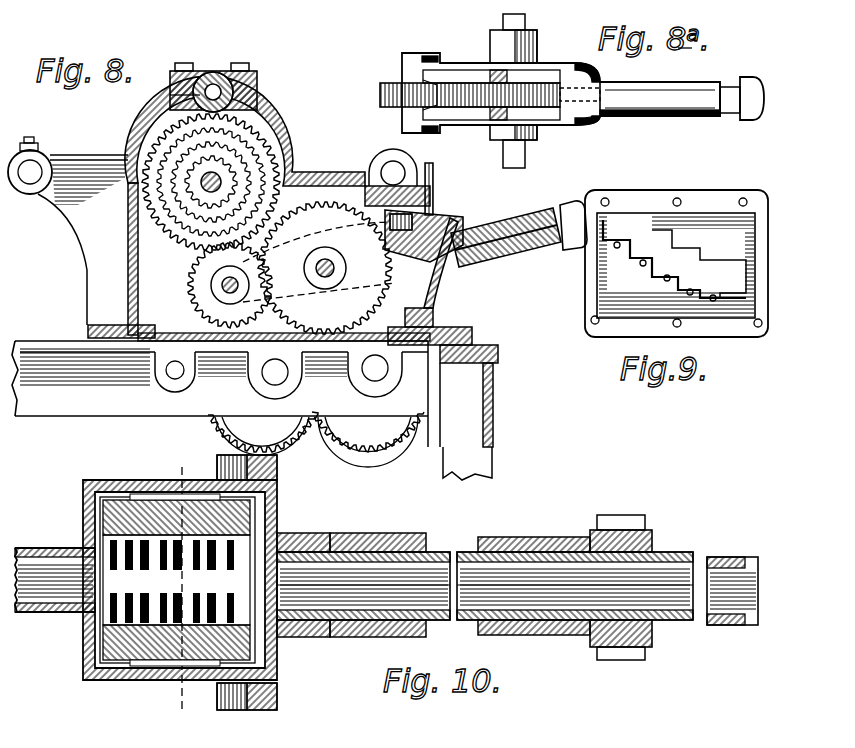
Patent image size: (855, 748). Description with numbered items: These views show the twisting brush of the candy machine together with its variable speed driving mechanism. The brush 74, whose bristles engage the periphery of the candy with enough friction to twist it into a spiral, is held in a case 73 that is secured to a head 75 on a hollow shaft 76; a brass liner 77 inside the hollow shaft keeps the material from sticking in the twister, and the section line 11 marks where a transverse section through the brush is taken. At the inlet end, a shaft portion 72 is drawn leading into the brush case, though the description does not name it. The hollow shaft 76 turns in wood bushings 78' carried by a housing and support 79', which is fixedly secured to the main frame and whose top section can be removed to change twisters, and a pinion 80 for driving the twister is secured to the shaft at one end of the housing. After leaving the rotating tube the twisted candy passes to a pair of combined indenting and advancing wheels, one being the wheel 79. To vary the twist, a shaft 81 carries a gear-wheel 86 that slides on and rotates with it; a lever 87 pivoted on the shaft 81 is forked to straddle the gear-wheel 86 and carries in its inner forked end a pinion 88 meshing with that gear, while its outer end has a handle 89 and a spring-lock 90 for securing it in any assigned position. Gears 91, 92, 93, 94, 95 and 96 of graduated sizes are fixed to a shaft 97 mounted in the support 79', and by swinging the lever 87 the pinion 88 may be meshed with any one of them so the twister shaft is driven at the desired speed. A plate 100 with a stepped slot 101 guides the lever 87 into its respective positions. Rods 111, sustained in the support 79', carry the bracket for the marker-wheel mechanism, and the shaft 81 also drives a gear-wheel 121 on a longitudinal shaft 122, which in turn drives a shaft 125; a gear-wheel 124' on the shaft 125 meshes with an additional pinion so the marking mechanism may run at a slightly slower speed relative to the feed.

In FIG. 10, the section line 11— 11 is at (197, 465).
In FIG. 10, the drive shaft 72 is at (50, 596).
In FIG. 10, the case 73 is at (127, 675).
In FIG. 10, the brush 74 is at (190, 577).
In FIG. 10, the head 75 is at (279, 510).
In FIG. 8, the hollow shaft 76 is at (218, 80).
In FIG. 10, the hollow shaft 76 is at (467, 551).
In FIG. 10, the brass liner 77 is at (436, 551).
In FIG. 8, the wood bushings 78' is at (213, 73).
In FIG. 10, the wood bushings 78' is at (460, 570).
In FIG. 8, the indenting and advancing wheel 79 is at (293, 278).
In FIG. 8, the housing and support 79' is at (166, 95).
In FIG. 10, the pinion 80 is at (634, 524).
In FIG. 8, the shaft 81 is at (327, 261).
In FIG. 8A, the shaft 81 is at (503, 22).
In FIG. 8, the gear-wheel 86 is at (325, 268).
In FIG. 8A, the gear-wheel 86 is at (465, 84).
In FIG. 8, the lever 87 is at (435, 222).
In FIG. 8A, the lever 87 is at (548, 122).
In FIG. 8, the pinion 88 is at (214, 300).
In FIG. 8A, the pinion 88 is at (384, 89).
In FIG. 8, the handle 89 is at (498, 246).
In FIG. 8A, the handle 89 is at (673, 115).
In FIG. 8, the spring-lock 90 is at (473, 223).
In FIG. 8A, the spring-lock 90 is at (750, 120).
In FIG. 8, the gear 91 is at (275, 170).
In FIG. 8, the gear 92 is at (270, 160).
In FIG. 8, the gear 93 is at (266, 150).
In FIG. 8, the gear 94 is at (262, 140).
In FIG. 8, the gear 95 is at (259, 126).
In FIG. 8, the gear 96 is at (256, 110).
In FIG. 8, the shaft 97 is at (206, 190).
In FIG. 8, the plate 100 is at (443, 286).
In FIG. 9, the plate 100 is at (690, 212).
In FIG. 8, the stepped slot 101 is at (432, 203).
In FIG. 9, the stepped slot 101 is at (674, 260).
In FIG. 8, the rods 111 is at (30, 172).
In FIG. 8, the gear-wheel 121 is at (368, 441).
In FIG. 8, the longitudinal shaft 122 is at (375, 368).
In FIG. 8, the gear-wheel 124' is at (276, 441).
In FIG. 8, the shaft 125 is at (282, 376).